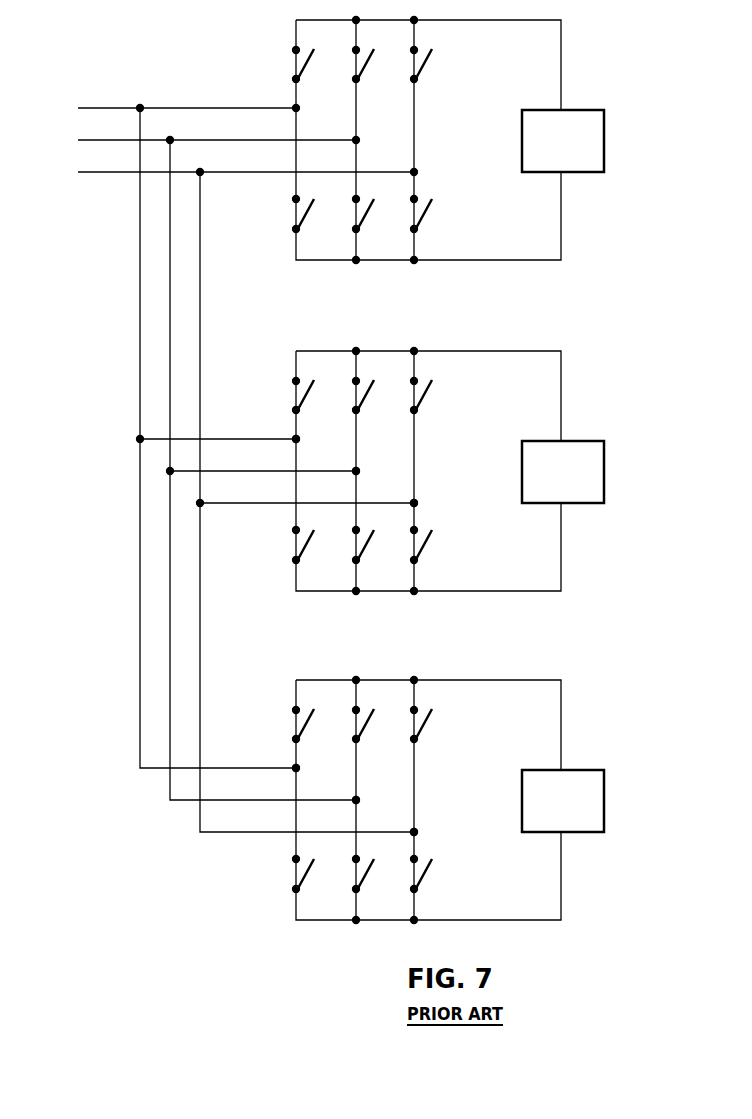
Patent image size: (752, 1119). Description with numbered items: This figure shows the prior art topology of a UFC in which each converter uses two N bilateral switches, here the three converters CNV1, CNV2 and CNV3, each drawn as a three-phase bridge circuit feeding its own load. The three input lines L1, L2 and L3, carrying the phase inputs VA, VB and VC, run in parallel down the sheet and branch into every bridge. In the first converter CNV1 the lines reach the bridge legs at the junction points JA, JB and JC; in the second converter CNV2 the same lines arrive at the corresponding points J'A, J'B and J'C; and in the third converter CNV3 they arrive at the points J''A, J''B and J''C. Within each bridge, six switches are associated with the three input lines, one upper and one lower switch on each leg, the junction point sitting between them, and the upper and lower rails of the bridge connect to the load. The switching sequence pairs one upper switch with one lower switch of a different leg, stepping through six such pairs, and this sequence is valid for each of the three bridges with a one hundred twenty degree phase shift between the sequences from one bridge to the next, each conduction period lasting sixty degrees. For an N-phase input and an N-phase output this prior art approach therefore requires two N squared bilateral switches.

The phase A voltage input VA is at (173, 110).
The phase B voltage input VB is at (203, 142).
The phase C voltage input VC is at (232, 174).
The supply line 1 L1 is at (93, 107).
The supply line 2 L2 is at (93, 139).
The supply line 3 L3 is at (93, 171).
The converter CNV1 is at (630, 212).
The converter CNV2 is at (630, 543).
The converter CNV3 is at (630, 877).
The junction A of converter 1 JA is at (299, 107).
The junction B of converter 1 JB is at (359, 138).
The junction C of converter 1 JC is at (417, 170).
The junction A of converter 2 J'A is at (312, 441).
The junction B of converter 2 J'B is at (372, 470).
The junction C of converter 2 J'C is at (431, 502).
The junction A of converter 3 J''A is at (313, 770).
The junction B of converter 3 J''B is at (373, 799).
The junction C of converter 3 J''C is at (432, 831).